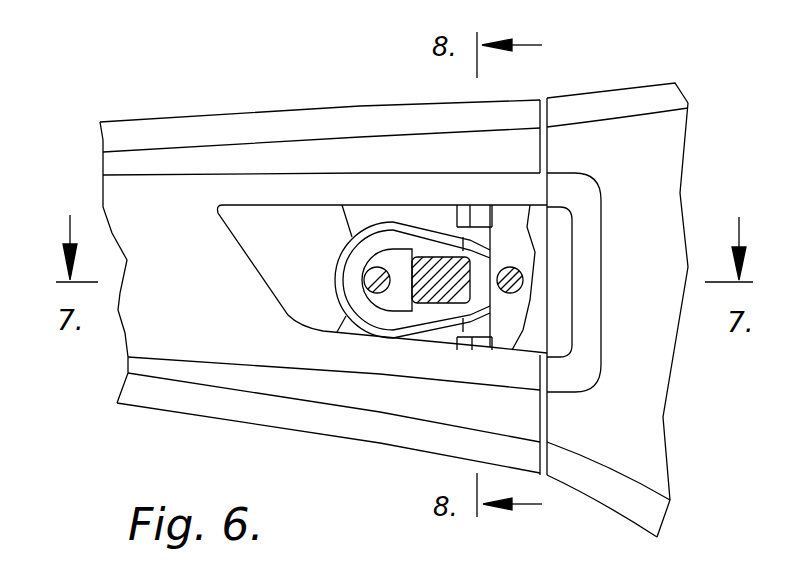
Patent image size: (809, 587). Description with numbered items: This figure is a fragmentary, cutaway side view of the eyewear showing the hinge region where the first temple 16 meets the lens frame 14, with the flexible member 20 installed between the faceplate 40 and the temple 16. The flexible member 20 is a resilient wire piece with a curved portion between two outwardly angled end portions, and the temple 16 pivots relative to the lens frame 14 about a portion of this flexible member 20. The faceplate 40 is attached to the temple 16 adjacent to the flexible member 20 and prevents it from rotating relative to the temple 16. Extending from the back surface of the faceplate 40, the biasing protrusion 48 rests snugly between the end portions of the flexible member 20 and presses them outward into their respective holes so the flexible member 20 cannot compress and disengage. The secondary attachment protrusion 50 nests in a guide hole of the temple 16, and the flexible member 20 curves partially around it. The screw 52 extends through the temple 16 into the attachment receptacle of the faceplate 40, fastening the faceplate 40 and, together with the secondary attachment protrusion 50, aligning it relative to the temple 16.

The lens frame 14 is at (602, 117).
The first temple 16 is at (187, 157).
The flexible member 20 is at (383, 240).
The faceplate 40 is at (262, 232).
The biasing protrusion 48 is at (442, 300).
The secondary attachment protrusion 50 is at (373, 277).
The screw 52 is at (522, 282).